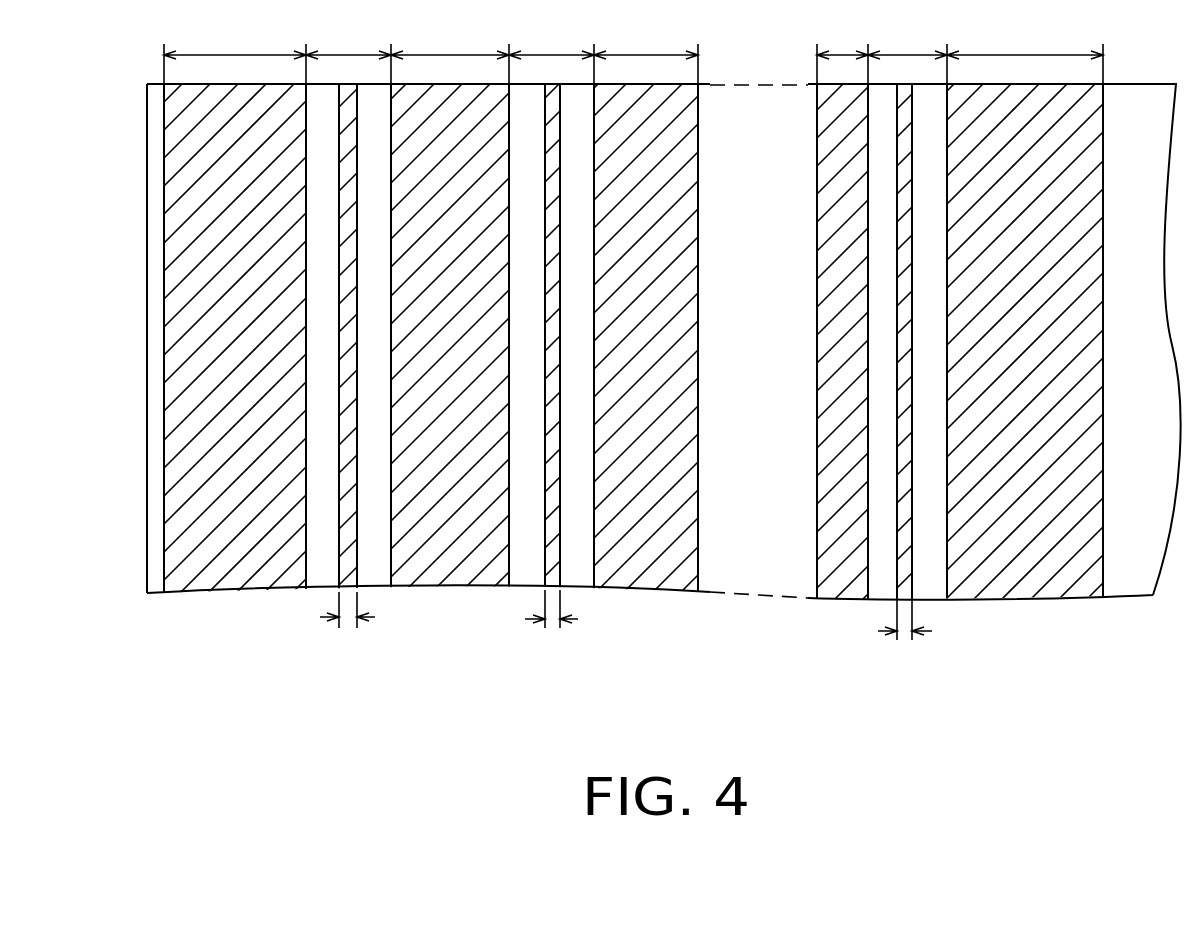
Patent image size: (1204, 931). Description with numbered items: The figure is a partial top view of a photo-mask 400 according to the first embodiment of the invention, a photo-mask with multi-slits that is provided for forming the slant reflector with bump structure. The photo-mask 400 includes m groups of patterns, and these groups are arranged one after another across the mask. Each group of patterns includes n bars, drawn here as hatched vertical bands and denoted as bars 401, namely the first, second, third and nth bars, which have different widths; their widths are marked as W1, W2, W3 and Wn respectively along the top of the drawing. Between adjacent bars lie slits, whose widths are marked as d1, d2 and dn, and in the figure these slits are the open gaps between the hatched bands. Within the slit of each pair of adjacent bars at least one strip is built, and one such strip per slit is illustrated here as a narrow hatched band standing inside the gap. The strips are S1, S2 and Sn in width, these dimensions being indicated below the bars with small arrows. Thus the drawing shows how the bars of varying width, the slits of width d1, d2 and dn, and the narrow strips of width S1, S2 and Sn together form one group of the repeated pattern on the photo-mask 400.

The photo-mask 400 is at (1182, 692).
The bars 401 is at (238, 570).
The width of first bar W1 is at (633, 47).
The width of second bar W2 is at (450, 47).
The width of third bar W3 is at (646, 47).
The width of nth bar Wn is at (842, 47).
The width of first slit d1 is at (348, 47).
The width of second slit d2 is at (551, 47).
The width of nth slit dn is at (907, 34).
The width of first strip S1 is at (348, 622).
The width of second strip S2 is at (553, 622).
The width of nth strip Sn is at (905, 637).